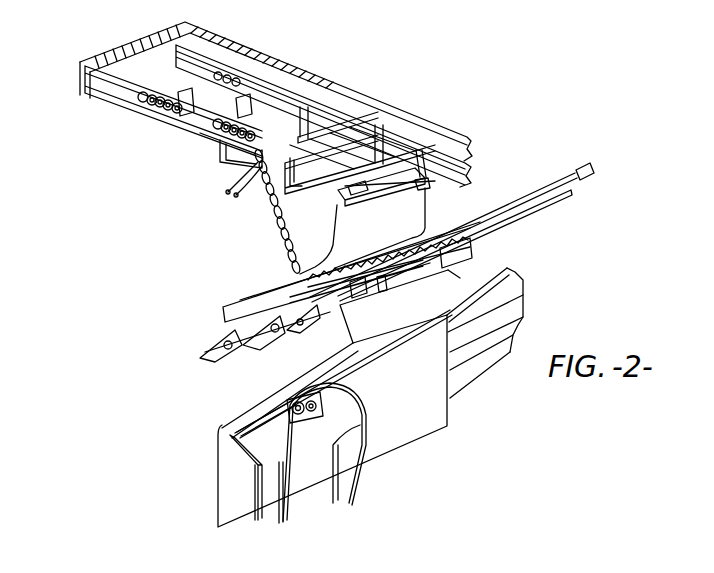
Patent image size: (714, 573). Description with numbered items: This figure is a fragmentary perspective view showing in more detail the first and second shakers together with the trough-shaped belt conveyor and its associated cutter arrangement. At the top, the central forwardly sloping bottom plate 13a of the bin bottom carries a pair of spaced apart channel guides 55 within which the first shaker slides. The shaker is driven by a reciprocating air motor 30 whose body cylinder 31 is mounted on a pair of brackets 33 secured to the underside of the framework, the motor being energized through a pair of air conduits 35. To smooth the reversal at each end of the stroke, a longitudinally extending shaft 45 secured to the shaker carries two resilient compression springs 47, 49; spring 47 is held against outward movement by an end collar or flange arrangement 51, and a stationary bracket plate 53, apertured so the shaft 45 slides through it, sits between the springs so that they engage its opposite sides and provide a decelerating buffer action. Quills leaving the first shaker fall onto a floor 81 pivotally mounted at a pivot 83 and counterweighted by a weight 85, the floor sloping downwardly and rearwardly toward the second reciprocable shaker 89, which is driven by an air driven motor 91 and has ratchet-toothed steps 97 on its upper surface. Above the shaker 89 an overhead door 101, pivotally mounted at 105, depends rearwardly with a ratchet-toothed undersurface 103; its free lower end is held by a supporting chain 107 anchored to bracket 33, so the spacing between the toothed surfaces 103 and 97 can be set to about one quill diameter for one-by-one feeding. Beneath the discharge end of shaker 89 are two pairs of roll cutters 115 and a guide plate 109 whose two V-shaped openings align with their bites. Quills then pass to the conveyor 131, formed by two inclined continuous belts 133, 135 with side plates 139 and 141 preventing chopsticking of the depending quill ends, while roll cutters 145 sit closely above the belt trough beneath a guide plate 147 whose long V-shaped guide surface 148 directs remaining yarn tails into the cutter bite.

The bottom plate 13a is at (112, 48).
The channel guides 55 is at (86, 86).
The end collar or flange arrangement 51 is at (148, 92).
The stationary bracket plate 53 is at (182, 93).
The resilient compression spring 47 is at (240, 92).
The longitudinally extending shaft 45 is at (200, 133).
The resilient compression spring 49 is at (220, 148).
The air conduits 35 is at (226, 191).
The supporting chain 107 is at (272, 212).
The brackets 33 is at (377, 125).
The body cylinder 31 is at (290, 170).
The reciprocating air motor 30 is at (311, 167).
The pivot mounting 105 is at (425, 184).
The ratchet-toothed undersurface 103 is at (425, 210).
The ratchet-toothed steps 97 is at (482, 224).
The overhead door 101 is at (272, 283).
The floor 81 is at (530, 210).
The weight 85 is at (592, 172).
The pivot 83 is at (574, 190).
The second reciprocable shaker 89 is at (458, 250).
The air driven motor 91 is at (385, 295).
The guide plate 109 is at (214, 336).
The roll cutters 115 is at (225, 352).
The conveyor 131 is at (393, 325).
The guide plate 147 is at (385, 352).
The V-shaped guide surface 148 is at (283, 393).
The roll cutters 145 is at (285, 418).
The continuous belt 135 is at (243, 462).
The continuous belt 133 is at (318, 470).
The side plate 139 is at (262, 522).
The side plate 141 is at (290, 510).